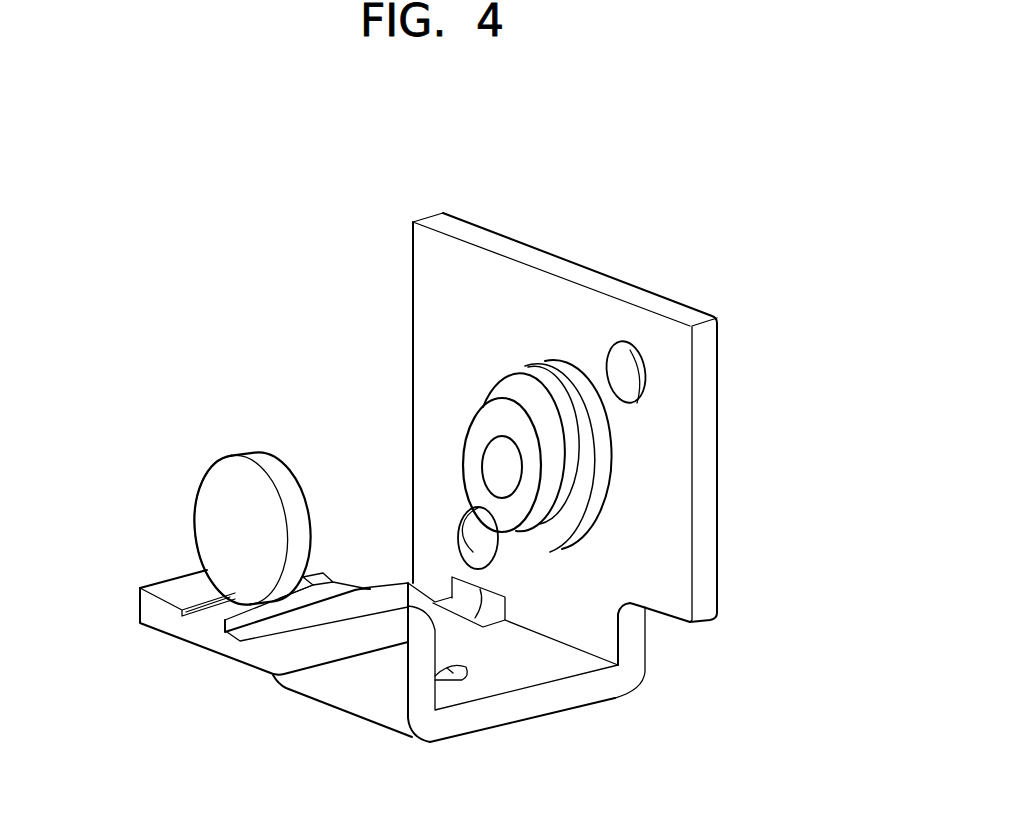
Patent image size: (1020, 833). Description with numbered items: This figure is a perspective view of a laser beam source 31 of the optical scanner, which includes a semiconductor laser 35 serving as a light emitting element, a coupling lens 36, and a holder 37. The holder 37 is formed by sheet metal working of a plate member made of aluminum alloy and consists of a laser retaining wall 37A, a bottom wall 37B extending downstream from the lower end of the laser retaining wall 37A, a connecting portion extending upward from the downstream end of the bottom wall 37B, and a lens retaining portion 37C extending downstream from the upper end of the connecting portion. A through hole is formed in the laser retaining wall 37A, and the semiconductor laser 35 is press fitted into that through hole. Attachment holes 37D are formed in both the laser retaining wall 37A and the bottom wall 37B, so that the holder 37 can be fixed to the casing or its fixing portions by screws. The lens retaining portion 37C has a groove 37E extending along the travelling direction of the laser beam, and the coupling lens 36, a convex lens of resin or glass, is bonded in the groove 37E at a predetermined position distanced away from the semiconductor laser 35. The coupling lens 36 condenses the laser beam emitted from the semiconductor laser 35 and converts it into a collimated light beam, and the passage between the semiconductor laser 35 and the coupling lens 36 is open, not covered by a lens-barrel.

The laser beam source 31 is at (718, 206).
The semiconductor laser 35 is at (470, 418).
The coupling lens 36 is at (233, 457).
The holder 37 is at (700, 293).
The laser retaining wall 37A is at (708, 550).
The bottom wall 37B is at (560, 695).
The lens retaining portion 37C is at (238, 640).
The attachment holes 37D is at (633, 395).
The groove 37E is at (223, 613).